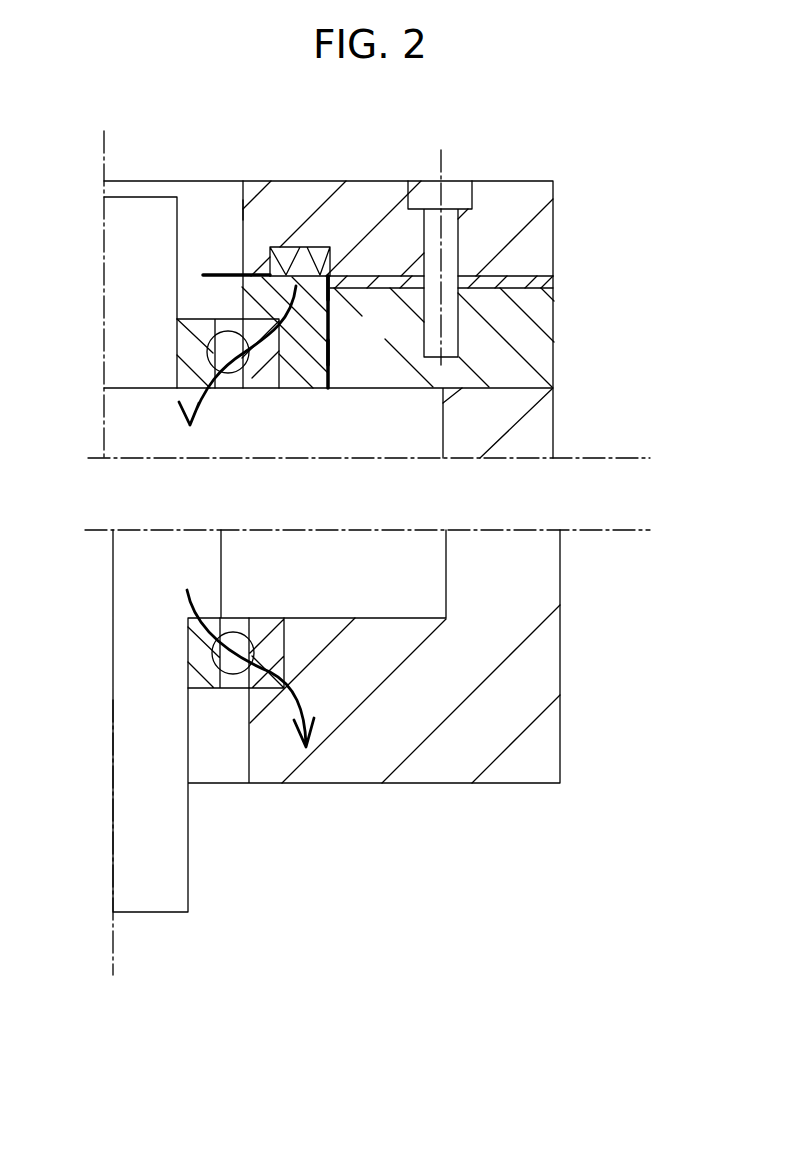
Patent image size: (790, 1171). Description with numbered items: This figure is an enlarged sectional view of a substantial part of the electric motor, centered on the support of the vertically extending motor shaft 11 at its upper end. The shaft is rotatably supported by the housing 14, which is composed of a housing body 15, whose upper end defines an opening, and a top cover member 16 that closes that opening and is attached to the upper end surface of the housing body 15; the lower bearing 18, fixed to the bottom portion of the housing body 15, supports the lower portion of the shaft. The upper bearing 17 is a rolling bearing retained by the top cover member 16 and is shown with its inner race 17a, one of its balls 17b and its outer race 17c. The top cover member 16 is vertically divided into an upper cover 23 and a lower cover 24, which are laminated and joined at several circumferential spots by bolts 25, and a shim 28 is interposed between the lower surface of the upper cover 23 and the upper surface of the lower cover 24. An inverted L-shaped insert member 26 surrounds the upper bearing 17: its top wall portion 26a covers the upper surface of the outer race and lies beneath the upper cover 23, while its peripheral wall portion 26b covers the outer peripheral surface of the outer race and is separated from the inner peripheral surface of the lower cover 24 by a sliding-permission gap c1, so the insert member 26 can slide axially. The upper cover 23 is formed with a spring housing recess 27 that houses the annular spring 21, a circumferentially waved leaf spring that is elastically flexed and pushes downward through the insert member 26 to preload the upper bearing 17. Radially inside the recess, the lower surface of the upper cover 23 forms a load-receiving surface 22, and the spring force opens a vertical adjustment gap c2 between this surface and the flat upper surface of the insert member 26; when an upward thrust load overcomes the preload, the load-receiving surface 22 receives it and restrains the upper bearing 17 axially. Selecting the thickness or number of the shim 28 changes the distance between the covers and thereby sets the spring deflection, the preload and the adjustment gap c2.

The motor shaft 11 is at (137, 196).
The housing 14 is at (675, 237).
The housing body 15 is at (557, 441).
The top cover member 16 is at (622, 213).
The upper bearing 17 is at (164, 340).
The inner race 17a is at (282, 378).
The ball 17b is at (229, 373).
The outer race 17c is at (189, 350).
The lower bearing 18 is at (219, 705).
The annular spring 21 is at (290, 247).
The load-receiving surface 22 is at (265, 272).
The upper cover 23 is at (556, 231).
The lower cover 24 is at (556, 331).
The bolt 25 is at (448, 181).
The insert member 26 is at (330, 280).
The top wall portion 26a is at (265, 277).
The peripheral wall portion 26b is at (332, 350).
The spring housing recess 27 is at (332, 248).
The shim 28 is at (492, 277).
The sliding-permission gap c1 is at (300, 330).
The vertical adjustment gap c2 is at (228, 286).